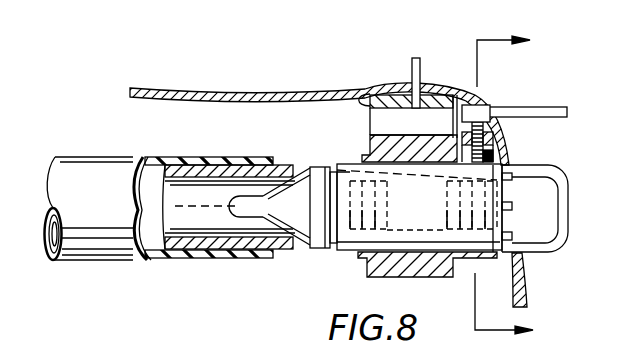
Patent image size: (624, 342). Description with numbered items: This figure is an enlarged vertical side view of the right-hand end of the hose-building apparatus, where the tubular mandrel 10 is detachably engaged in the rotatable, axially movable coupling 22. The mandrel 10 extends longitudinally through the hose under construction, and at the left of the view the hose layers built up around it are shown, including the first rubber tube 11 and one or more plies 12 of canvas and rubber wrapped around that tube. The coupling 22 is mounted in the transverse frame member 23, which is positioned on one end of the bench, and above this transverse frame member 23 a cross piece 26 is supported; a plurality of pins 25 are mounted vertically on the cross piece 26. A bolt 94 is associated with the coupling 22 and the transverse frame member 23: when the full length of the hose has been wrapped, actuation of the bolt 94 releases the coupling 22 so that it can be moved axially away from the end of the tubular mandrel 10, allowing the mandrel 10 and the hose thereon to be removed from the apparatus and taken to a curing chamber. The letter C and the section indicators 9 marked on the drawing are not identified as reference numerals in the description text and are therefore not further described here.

The curved panel / mounting plate C is at (205, 92).
The plies of canvas and rubber 12 is at (150, 158).
The first rubber tube 11 is at (177, 163).
The tubular mandrel 10 is at (277, 164).
The coupling 22 is at (325, 249).
The transverse frame member 23 is at (443, 278).
The cross piece 26 is at (357, 88).
The pins 25 is at (422, 60).
The bolt 94 is at (493, 108).
The section line 9- 9 is at (514, 186).